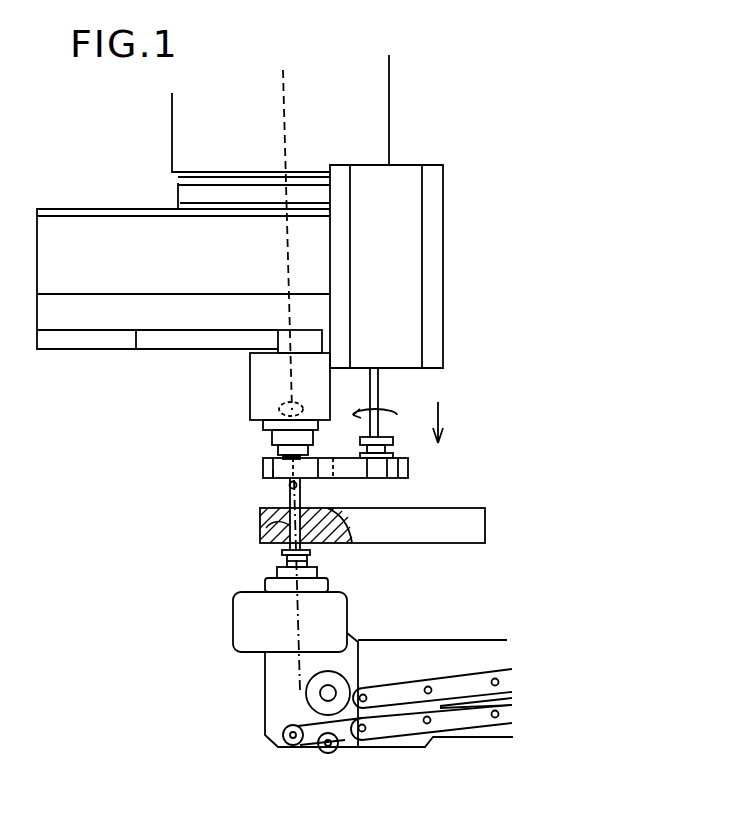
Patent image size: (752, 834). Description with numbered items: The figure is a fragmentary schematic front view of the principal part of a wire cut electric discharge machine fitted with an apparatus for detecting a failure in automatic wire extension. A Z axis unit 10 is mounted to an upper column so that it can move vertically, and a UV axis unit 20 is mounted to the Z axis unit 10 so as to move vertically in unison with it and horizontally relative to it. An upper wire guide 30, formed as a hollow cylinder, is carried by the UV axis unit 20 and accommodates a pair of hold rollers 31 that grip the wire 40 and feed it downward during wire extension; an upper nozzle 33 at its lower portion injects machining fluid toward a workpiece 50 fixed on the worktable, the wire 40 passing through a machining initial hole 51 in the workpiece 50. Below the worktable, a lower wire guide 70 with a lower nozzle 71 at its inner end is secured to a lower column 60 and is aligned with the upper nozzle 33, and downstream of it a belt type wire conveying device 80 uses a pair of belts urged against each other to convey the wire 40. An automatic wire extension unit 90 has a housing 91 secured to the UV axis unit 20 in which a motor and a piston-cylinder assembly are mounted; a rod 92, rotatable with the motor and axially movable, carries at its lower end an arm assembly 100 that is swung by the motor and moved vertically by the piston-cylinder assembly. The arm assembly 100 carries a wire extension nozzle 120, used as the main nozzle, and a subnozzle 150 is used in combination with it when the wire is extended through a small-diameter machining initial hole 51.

The Z axis unit 10 is at (423, 75).
The UV axis unit 20 is at (90, 226).
The upper wire guide 30 is at (220, 399).
The hold rollers 31 is at (289, 402).
The upper nozzle 33 is at (270, 453).
The wire 40 is at (286, 135).
The workpiece 50 is at (485, 520).
The machining initial hole 51 is at (260, 528).
The lower column 60 is at (472, 647).
The lower wire guide 70 is at (222, 632).
The lower nozzle 71 is at (277, 560).
The belt type wire conveying device 80 is at (468, 743).
The automatic wire extension unit 90 is at (448, 257).
The housing 91 is at (425, 250).
The rod 92 is at (379, 385).
The arm assembly 100 is at (408, 460).
The wire extension nozzle 120 is at (264, 476).
The subnozzle 150 is at (289, 488).